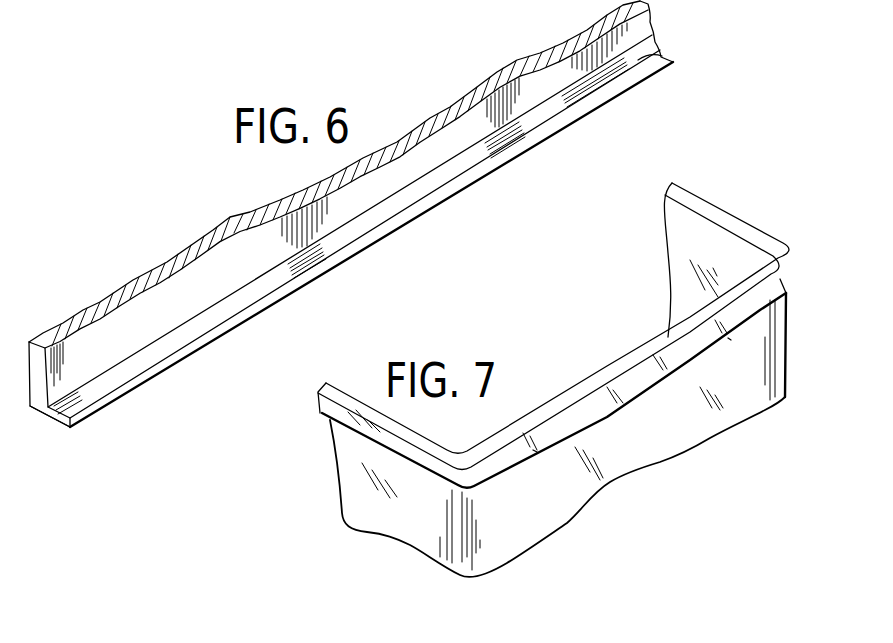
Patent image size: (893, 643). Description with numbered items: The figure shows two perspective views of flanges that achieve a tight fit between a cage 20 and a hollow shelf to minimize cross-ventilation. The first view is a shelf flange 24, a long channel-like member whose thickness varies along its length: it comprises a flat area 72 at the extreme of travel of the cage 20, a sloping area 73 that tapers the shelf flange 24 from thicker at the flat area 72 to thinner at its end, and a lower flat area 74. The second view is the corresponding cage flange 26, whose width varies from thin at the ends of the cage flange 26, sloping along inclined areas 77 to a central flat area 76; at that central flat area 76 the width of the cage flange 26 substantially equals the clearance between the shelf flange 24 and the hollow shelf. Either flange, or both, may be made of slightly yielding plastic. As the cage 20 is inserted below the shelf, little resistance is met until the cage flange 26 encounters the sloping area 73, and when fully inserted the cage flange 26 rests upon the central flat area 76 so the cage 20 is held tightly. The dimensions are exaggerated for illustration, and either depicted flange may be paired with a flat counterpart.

In FIG. 7, the cage 20 is at (372, 492).
In FIG. 6, the shelf flange 24 is at (200, 356).
In FIG. 7, the cage flange 26 is at (796, 283).
In FIG. 6, the flat area 72 is at (413, 190).
In FIG. 6, the sloping area 73 is at (673, 60).
In FIG. 6, the lower flat area 74 is at (88, 399).
In FIG. 7, the central flat area 76 is at (614, 413).
In FIG. 7, the inclined areas 77 is at (533, 450).